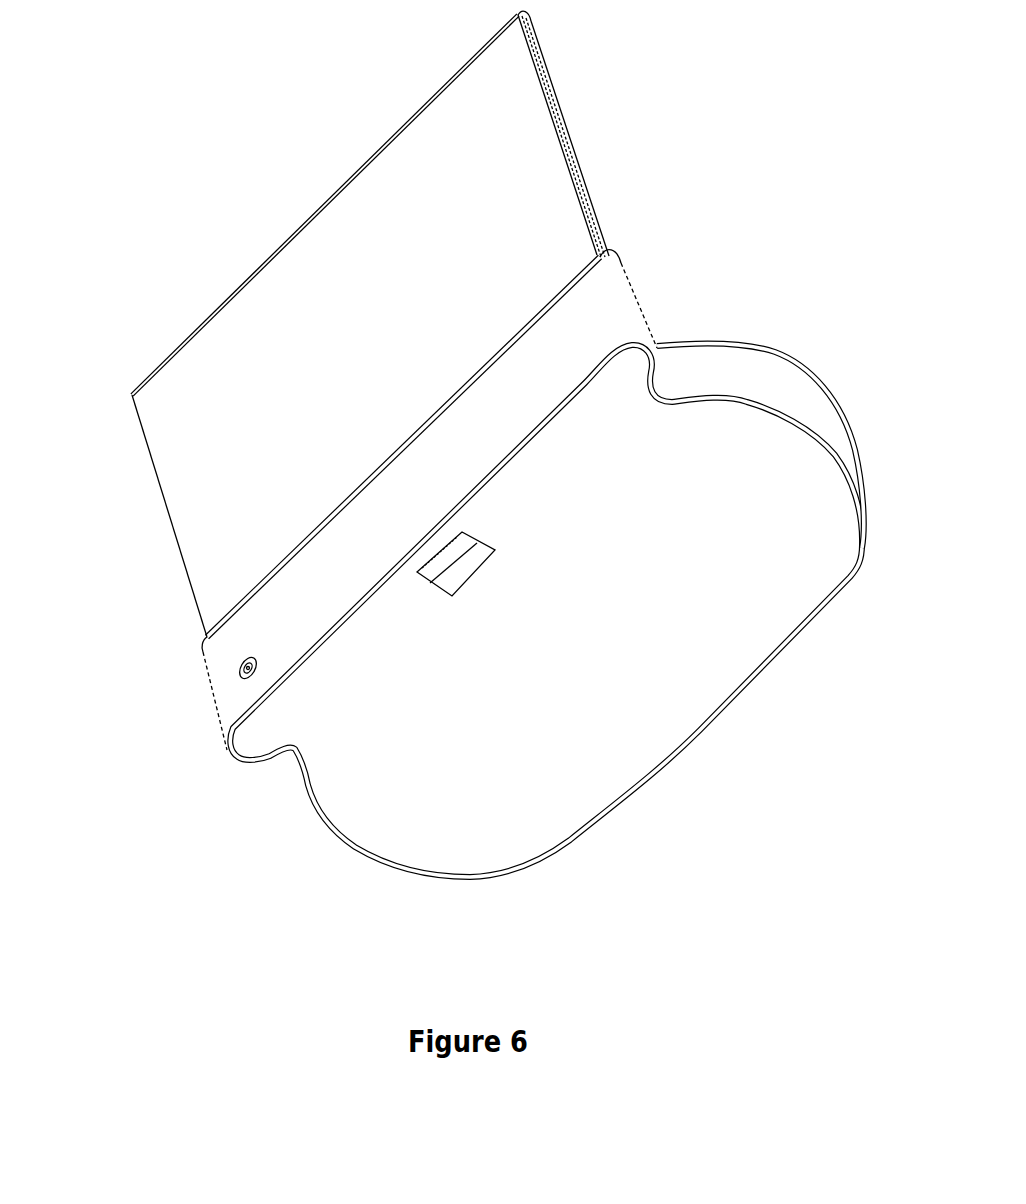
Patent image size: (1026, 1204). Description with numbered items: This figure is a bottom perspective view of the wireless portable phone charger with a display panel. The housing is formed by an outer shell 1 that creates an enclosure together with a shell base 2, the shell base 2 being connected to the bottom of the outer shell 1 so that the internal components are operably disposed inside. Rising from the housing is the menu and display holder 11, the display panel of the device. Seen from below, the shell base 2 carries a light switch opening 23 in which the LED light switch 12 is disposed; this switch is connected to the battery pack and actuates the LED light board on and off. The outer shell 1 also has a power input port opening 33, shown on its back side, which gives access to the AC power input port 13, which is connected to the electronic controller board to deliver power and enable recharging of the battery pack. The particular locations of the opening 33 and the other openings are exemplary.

The outer shell 1 is at (752, 380).
The shell base 2 is at (698, 637).
The menu and display holder 11 is at (208, 514).
The LED light switch 12 is at (447, 565).
The power input port 13 is at (240, 670).
The light switch opening 23 is at (495, 550).
The power input port opening 33 is at (242, 678).